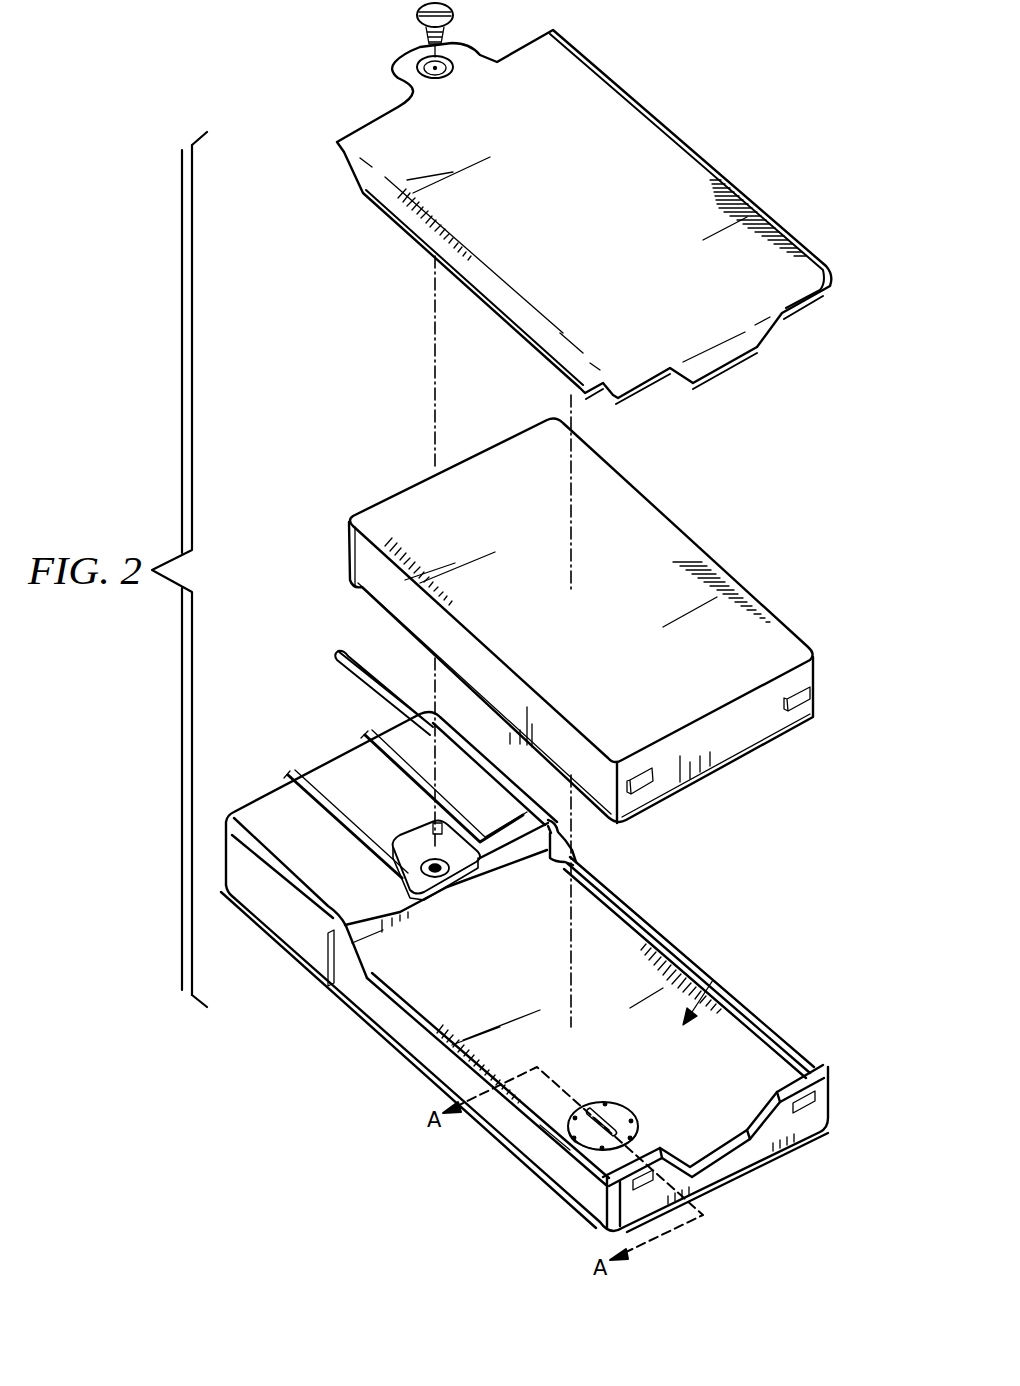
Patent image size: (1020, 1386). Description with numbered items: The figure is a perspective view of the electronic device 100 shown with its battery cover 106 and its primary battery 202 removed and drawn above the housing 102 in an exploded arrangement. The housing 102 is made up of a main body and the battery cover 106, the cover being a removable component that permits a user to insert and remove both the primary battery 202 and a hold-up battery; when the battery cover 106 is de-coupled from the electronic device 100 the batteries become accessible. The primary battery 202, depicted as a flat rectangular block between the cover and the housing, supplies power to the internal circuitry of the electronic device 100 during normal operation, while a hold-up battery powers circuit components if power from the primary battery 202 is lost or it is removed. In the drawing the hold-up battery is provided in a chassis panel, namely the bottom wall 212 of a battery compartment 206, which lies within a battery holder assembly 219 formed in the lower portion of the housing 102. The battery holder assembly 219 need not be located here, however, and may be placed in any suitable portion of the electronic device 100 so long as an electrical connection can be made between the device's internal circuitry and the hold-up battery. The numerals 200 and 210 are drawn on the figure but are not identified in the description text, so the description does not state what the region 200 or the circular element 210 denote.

The electronic device 100 is at (316, 101).
The battery cover 106 is at (604, 239).
The primary battery 202 is at (644, 672).
The housing 102 is at (306, 934).
The battery compartment 200 is at (475, 954).
The battery compartment 206 is at (708, 988).
The bottom wall 212 is at (757, 1060).
The rotatable disc fastener 210 is at (620, 1100).
The battery holder assembly 219 is at (558, 1122).